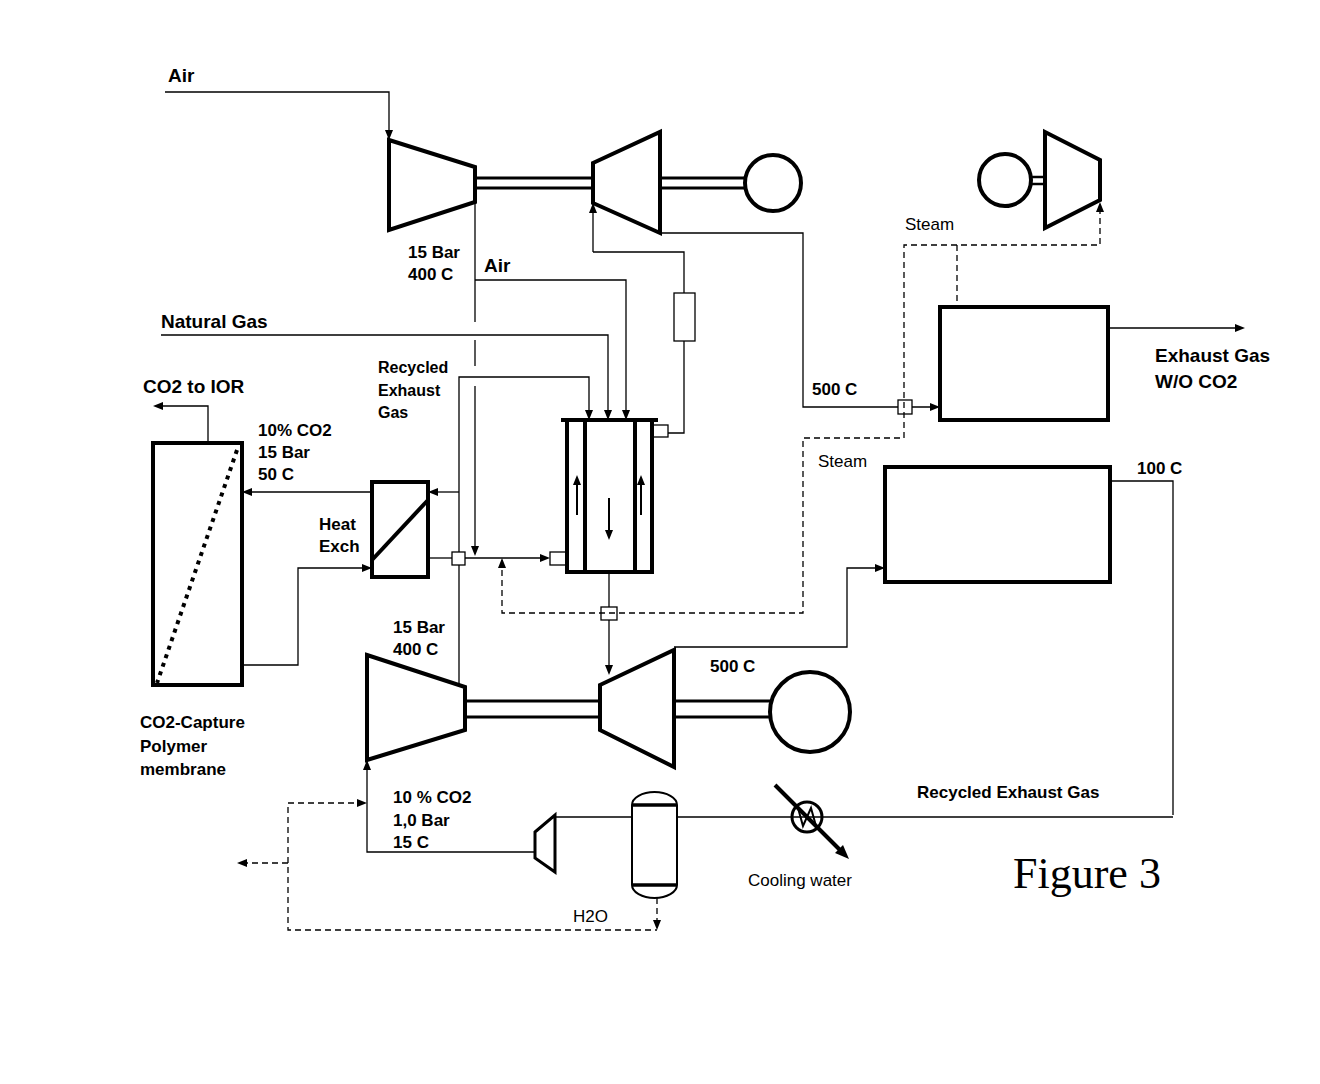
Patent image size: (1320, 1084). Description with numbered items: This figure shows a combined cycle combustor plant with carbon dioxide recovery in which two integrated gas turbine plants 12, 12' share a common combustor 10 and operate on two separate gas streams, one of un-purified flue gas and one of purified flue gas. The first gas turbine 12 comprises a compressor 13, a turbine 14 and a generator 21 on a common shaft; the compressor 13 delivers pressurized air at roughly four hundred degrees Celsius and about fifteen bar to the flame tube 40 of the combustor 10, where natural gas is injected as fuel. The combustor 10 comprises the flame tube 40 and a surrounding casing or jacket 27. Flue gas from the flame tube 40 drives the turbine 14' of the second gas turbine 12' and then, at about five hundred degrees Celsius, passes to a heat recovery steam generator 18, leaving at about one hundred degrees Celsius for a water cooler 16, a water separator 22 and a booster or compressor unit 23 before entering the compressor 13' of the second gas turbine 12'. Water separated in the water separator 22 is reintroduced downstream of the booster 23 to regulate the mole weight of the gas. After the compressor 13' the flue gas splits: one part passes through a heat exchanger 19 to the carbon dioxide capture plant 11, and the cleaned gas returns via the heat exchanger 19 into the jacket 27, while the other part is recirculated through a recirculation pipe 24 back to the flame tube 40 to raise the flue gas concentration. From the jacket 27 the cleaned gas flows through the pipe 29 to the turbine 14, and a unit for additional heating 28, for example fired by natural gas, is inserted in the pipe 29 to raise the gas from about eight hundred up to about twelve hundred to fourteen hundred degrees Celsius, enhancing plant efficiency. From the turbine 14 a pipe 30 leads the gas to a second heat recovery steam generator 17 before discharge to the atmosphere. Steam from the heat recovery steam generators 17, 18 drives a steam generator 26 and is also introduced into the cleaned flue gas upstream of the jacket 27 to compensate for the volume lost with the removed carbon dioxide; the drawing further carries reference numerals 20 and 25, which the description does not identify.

The combustor 10 is at (663, 505).
The CO2 capture plant 11 is at (222, 565).
The first gas turbine 12 is at (534, 134).
The second gas turbine 12' is at (532, 740).
The compressor 13 is at (370, 185).
The compressor 13' is at (382, 707).
The turbine 14 is at (657, 154).
The turbine 14' is at (679, 708).
The water cooler 16 is at (825, 825).
The second heat recovery steam generator 17 is at (1073, 337).
The heat recovery steam generator 18 is at (1038, 550).
The heat exchanger 19 is at (395, 512).
The generator 20 is at (823, 692).
The generator 21 is at (772, 166).
The water separator 22 is at (660, 848).
The booster 23 is at (543, 848).
The recirculation pipe 24 is at (508, 377).
The steam turbine 25 is at (1088, 179).
The steam generator 26 is at (997, 168).
The jacket 27 is at (642, 533).
The unit for additional heating 28 is at (705, 322).
The pipe 29 is at (686, 376).
The pipe 30 is at (805, 322).
The flame tube 40 is at (597, 467).